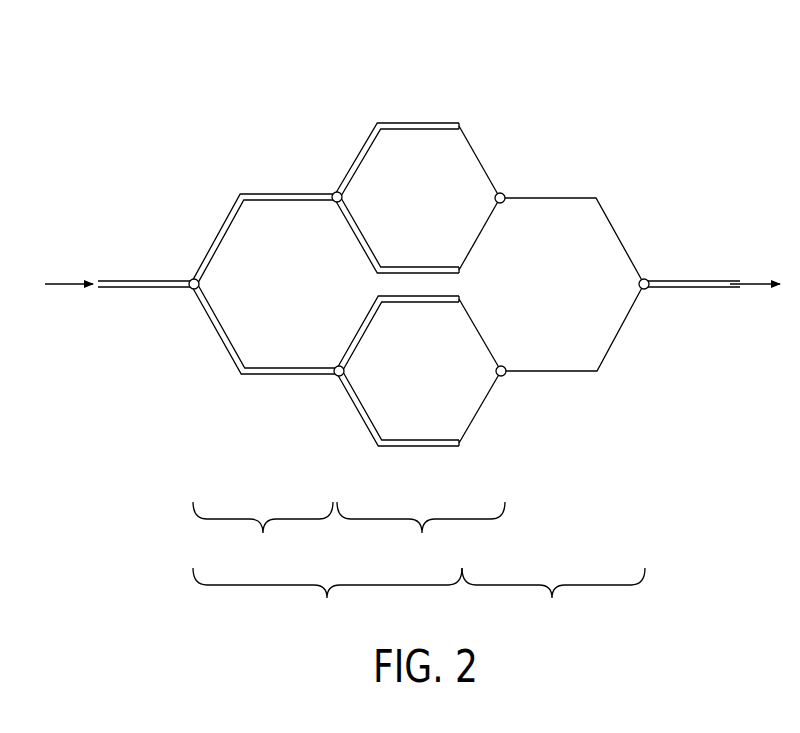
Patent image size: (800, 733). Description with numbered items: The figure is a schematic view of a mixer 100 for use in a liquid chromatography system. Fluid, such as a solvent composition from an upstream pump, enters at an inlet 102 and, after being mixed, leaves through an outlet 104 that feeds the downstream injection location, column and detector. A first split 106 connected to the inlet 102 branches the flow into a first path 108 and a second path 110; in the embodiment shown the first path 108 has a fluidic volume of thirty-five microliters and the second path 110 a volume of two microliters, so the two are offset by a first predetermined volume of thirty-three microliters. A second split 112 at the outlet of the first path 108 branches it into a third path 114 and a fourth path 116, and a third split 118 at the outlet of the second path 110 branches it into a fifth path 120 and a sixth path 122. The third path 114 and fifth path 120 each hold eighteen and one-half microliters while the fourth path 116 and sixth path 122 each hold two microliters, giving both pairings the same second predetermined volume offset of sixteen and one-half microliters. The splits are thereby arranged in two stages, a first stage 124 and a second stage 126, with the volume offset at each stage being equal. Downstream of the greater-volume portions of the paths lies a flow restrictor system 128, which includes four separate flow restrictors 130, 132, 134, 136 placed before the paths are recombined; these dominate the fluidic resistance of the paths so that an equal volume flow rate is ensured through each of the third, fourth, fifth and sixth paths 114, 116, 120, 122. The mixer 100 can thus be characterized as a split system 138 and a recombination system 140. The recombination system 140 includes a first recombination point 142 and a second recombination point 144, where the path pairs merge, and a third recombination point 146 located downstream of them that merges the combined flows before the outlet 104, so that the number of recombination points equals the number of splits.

The mixer 100 is at (128, 135).
The inlet 102 is at (108, 279).
The outlet 104 is at (720, 279).
The first split 106 is at (190, 279).
The first path 108 is at (268, 193).
The second path 110 is at (265, 375).
The second split 112 is at (334, 192).
The third path 114 is at (401, 122).
The fourth path 116 is at (393, 274).
The third split 118 is at (334, 376).
The fifth path 120 is at (443, 296).
The sixth path 122 is at (398, 447).
The first stage 124 is at (263, 535).
The second stage 126 is at (421, 535).
The flow restrictor system 128 is at (507, 122).
The flow restrictor 130 is at (474, 136).
The flow restrictor 132 is at (481, 234).
The flow restrictor 134 is at (483, 335).
The flow restrictor 136 is at (475, 429).
The split system 138 is at (327, 602).
The recombination system 140 is at (553, 602).
The first recombination point 142 is at (507, 195).
The second recombination point 144 is at (506, 374).
The third recombination point 146 is at (647, 279).